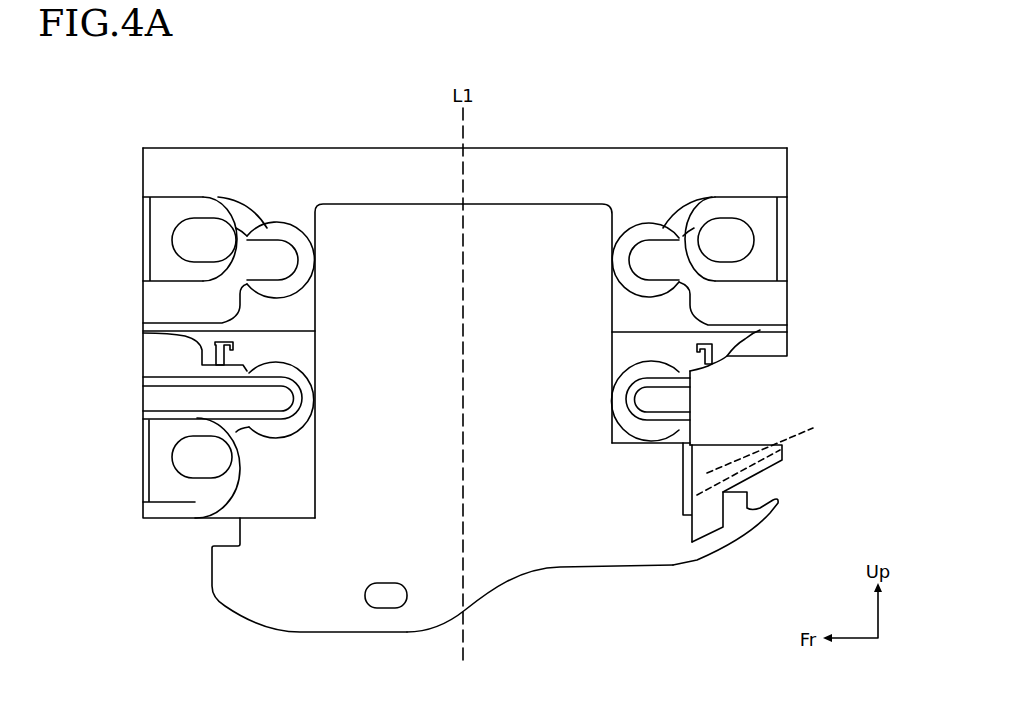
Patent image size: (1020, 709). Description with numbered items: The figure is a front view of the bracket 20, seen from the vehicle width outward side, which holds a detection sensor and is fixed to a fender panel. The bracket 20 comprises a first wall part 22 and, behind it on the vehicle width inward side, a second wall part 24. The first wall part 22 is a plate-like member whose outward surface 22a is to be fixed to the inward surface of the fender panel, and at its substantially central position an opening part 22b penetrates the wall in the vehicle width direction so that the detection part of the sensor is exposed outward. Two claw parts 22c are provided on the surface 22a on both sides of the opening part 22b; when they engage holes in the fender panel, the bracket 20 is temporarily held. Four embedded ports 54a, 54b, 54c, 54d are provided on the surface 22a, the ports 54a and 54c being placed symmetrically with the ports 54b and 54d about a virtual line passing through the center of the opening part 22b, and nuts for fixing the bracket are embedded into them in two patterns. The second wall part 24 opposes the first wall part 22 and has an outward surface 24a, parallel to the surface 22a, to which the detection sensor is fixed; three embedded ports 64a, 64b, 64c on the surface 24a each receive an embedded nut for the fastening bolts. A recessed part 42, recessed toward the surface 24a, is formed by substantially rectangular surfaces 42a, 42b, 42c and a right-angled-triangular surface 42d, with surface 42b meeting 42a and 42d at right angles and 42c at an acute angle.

The bracket 20 is at (184, 123).
The first wall part 22 is at (263, 149).
The surface 22a is at (320, 168).
The opening part 22b is at (390, 204).
The claw part 22c is at (202, 350).
The second wall part 24 is at (302, 636).
The surface 24a is at (496, 405).
The recessed part 42 is at (866, 352).
The surface 42a is at (763, 360).
The surface 42b is at (692, 392).
The surface 42c is at (782, 458).
The surface 42d is at (780, 446).
The embedded port 54a is at (222, 208).
The embedded port 54b is at (626, 237).
The embedded port 54c is at (270, 428).
The embedded port 54d is at (647, 433).
The embedded port 64a is at (183, 247).
The embedded port 64b is at (743, 237).
The embedded port 64c is at (193, 488).